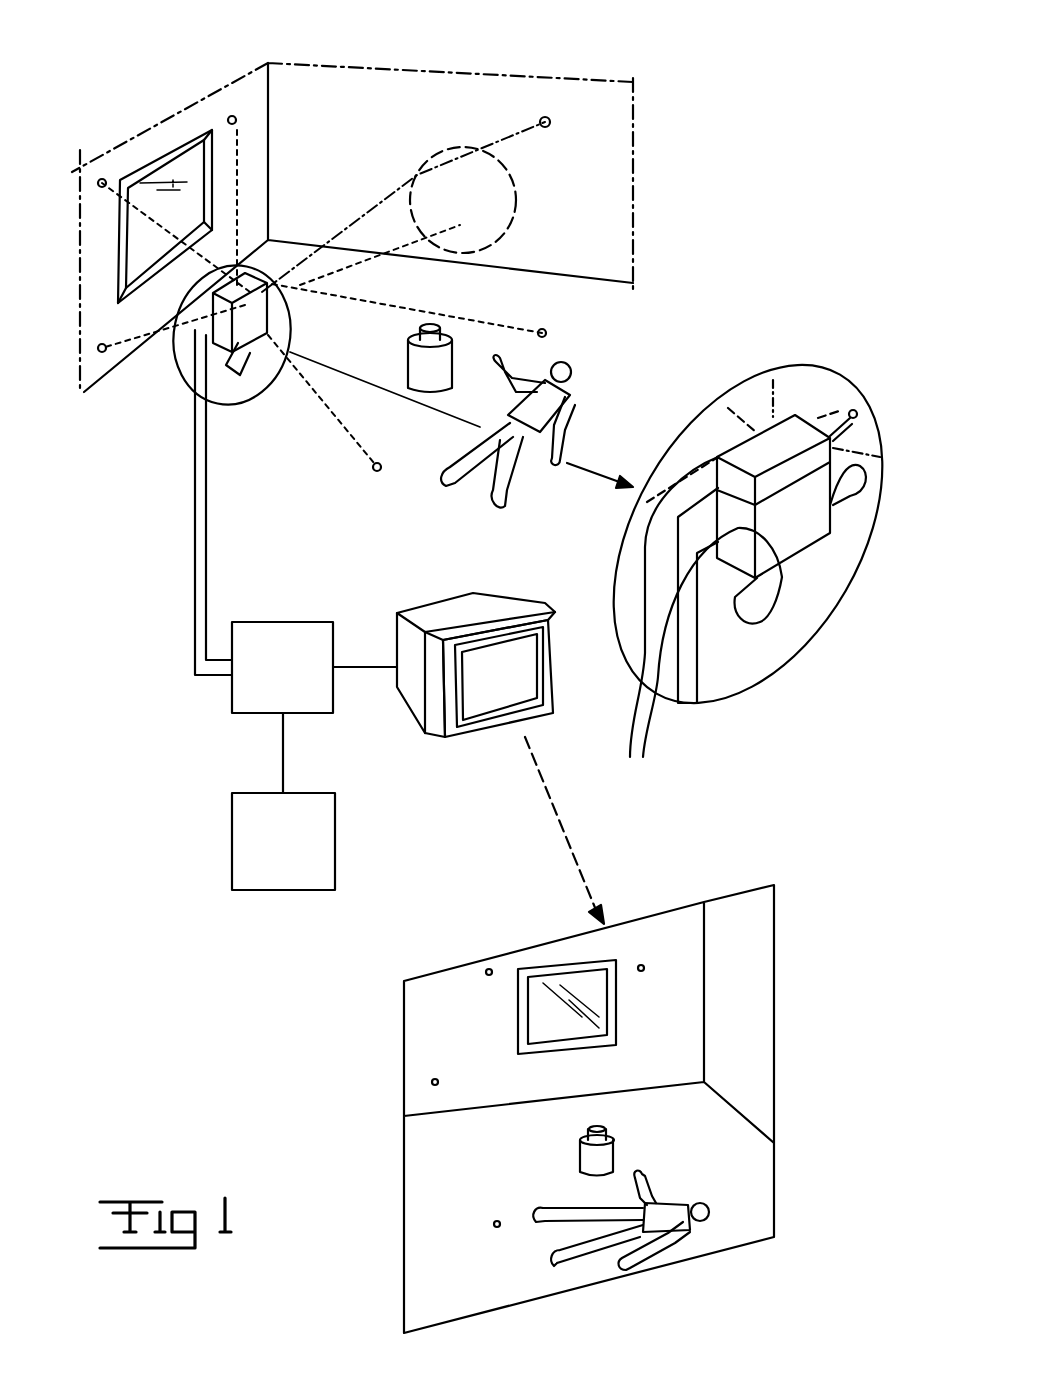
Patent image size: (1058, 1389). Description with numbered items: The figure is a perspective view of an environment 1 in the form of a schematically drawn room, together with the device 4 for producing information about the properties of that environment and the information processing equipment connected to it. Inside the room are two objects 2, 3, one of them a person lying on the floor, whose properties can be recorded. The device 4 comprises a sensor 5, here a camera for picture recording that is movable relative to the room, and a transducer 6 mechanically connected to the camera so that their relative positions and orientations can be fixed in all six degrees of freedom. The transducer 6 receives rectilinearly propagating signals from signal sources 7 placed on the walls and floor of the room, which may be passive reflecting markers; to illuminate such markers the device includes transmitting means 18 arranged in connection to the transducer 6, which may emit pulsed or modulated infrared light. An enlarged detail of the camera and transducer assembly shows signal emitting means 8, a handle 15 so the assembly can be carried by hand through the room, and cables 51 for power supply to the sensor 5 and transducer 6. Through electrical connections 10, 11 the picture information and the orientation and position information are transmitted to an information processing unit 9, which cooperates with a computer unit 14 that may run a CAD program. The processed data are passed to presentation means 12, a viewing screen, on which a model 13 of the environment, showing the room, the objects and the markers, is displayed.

The environment 1 is at (578, 238).
The object 2 is at (437, 375).
The object 3 is at (573, 387).
The device 4 is at (155, 397).
The sensor 5 is at (247, 350).
The transducer 6 is at (250, 265).
The signal sources 7 is at (228, 119).
The signal emitting means 8 is at (738, 476).
The information processing unit 9 is at (253, 692).
The electrical connection 10 is at (207, 593).
The electrical connection 11 is at (190, 568).
The presentation means 12 is at (503, 662).
The model 13 is at (746, 995).
The computer unit 14 is at (253, 842).
The handle 15 is at (190, 440).
The transmitting means 18 is at (855, 410).
The cables 51 is at (633, 725).